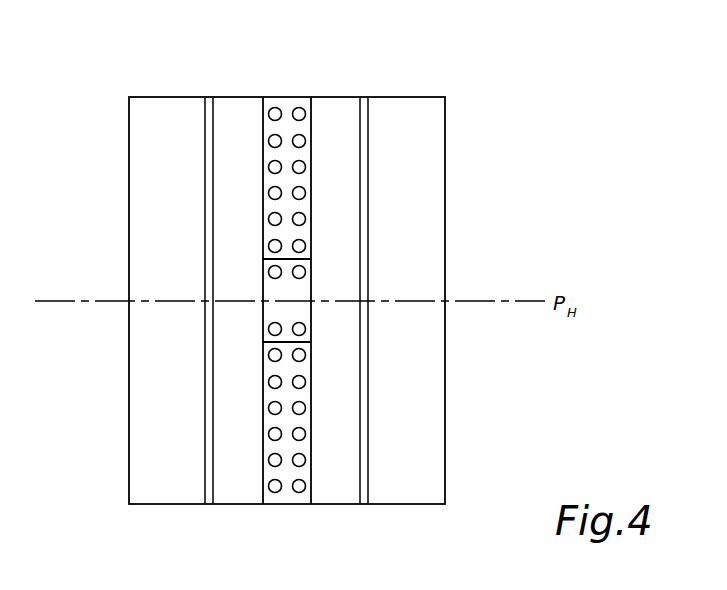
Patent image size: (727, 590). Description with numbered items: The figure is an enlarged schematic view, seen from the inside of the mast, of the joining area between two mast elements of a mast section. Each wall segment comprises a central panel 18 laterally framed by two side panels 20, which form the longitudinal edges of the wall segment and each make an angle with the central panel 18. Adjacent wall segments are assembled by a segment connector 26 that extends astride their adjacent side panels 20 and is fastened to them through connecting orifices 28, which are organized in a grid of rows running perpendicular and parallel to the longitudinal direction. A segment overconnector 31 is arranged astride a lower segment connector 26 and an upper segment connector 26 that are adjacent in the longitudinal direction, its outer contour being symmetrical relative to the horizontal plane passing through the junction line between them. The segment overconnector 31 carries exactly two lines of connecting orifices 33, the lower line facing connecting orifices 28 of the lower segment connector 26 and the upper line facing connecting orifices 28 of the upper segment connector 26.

The central panel 18 is at (140, 169).
The side panel 20 is at (240, 151).
The segment connector 26 is at (290, 103).
The connecting orifice 28 is at (268, 141).
The segment overconnector 31 is at (278, 287).
The connecting orifice 33 is at (268, 272).